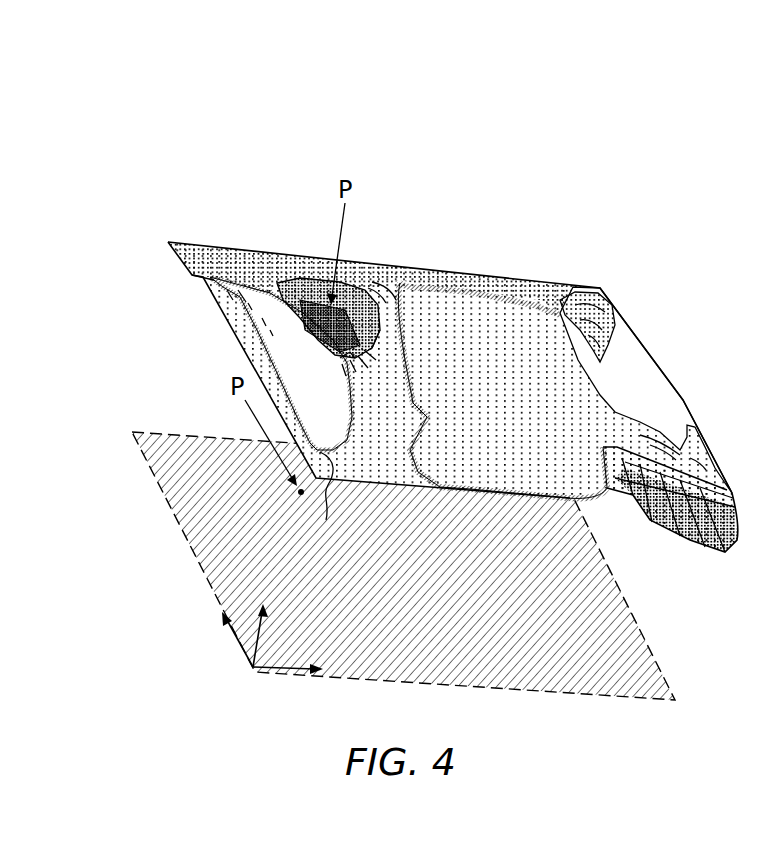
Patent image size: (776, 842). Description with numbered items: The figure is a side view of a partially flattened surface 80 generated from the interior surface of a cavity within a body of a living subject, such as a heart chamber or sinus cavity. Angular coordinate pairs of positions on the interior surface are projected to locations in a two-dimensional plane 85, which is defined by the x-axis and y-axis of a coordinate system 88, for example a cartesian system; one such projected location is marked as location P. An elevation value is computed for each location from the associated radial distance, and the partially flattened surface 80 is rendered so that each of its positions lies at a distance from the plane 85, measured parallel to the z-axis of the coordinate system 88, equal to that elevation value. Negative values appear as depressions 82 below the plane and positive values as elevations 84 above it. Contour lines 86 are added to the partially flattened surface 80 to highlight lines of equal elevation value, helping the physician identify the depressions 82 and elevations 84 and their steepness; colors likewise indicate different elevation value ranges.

The partially flattened surface 80 is at (522, 278).
The depressions 82 is at (315, 296).
The elevations 84 is at (282, 340).
The 2D plane 85 is at (171, 430).
The contour lines 86 is at (386, 296).
The coordinate system 88 is at (253, 667).